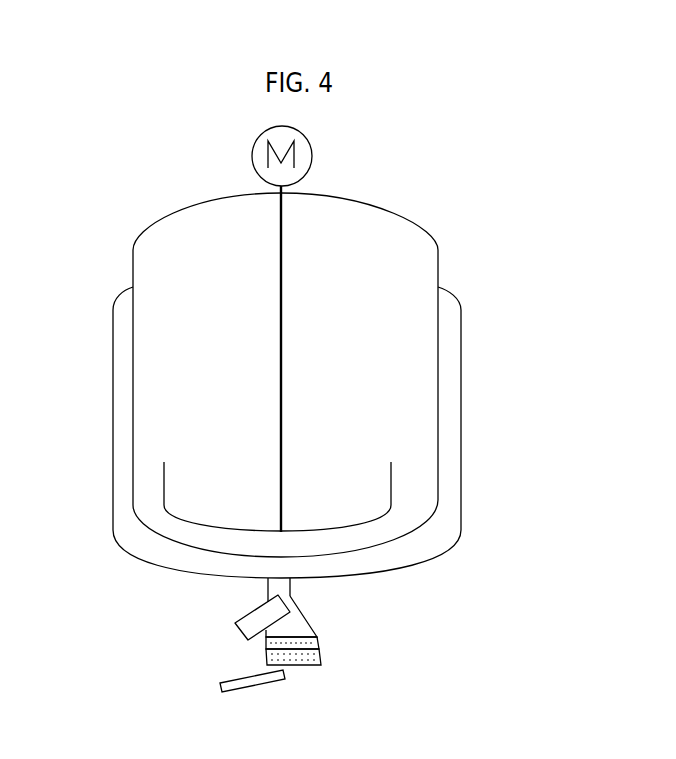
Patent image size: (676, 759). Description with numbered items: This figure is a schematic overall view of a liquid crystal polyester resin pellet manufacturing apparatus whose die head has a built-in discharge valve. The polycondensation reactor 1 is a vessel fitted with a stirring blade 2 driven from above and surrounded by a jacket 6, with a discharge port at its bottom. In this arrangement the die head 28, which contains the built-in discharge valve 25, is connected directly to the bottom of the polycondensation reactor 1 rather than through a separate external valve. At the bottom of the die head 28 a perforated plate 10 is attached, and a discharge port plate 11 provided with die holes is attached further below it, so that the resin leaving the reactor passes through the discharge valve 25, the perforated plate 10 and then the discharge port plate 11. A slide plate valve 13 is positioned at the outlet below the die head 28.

The polycondensation reactor 1 is at (155, 238).
The stirring blade 2 is at (284, 305).
The jacket 6 is at (453, 422).
The discharge valve 25 is at (236, 622).
The die head 28 is at (292, 612).
The perforated plate 10 is at (265, 648).
The discharge port plate 11 is at (321, 656).
The slide plate valve 13 is at (220, 685).